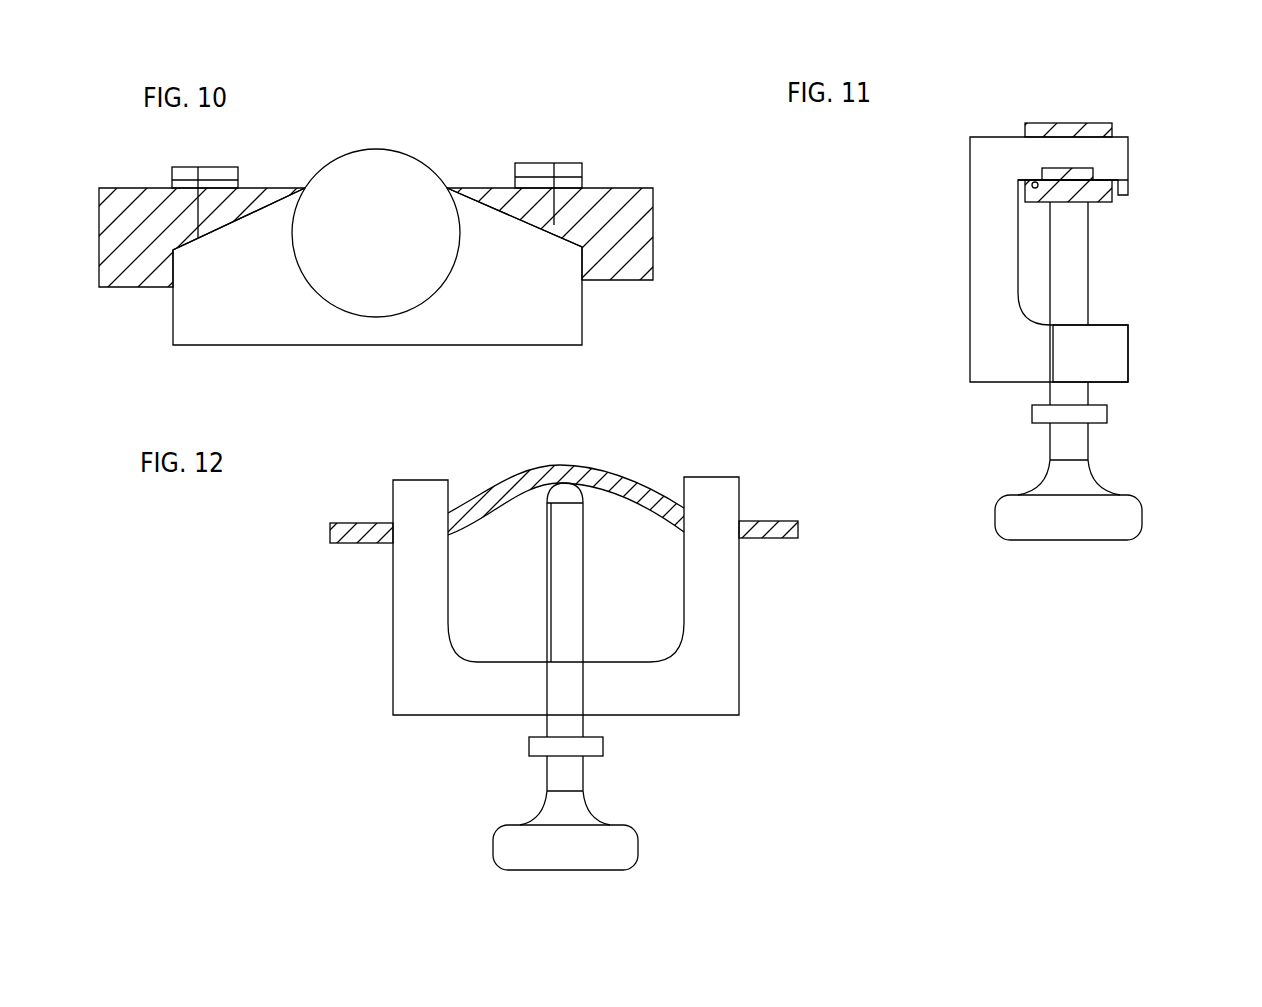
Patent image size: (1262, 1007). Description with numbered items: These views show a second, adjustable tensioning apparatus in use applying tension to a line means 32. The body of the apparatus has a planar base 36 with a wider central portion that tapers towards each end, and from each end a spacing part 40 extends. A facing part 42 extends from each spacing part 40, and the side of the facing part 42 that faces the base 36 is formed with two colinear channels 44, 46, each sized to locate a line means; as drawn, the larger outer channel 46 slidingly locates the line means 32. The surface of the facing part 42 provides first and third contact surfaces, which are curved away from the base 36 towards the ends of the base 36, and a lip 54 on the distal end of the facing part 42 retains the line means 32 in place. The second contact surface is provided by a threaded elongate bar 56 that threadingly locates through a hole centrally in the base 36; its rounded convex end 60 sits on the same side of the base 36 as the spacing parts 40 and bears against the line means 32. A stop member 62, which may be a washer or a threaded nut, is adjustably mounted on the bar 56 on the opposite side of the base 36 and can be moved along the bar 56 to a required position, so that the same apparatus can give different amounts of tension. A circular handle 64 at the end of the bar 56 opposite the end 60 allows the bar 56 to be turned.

In FIG. 10, the line means 32 is at (613, 213).
In FIG. 11, the line means 32 is at (1043, 128).
In FIG. 12, the line means 32 is at (479, 502).
In FIG. 10, the base 36 is at (545, 317).
In FIG. 11, the base 36 is at (1108, 343).
In FIG. 11, the spacing parts 40 is at (993, 253).
In FIG. 12, the spacing parts 40 is at (710, 583).
In FIG. 11, the facing parts 42 is at (1113, 157).
In FIG. 11, the channel 44 is at (1080, 172).
In FIG. 11, the outer channel 46 is at (1035, 185).
In FIG. 10, the lip 54 is at (568, 167).
In FIG. 11, the lip 54 is at (1123, 195).
In FIG. 11, the threaded elongate bar 56 is at (1073, 265).
In FIG. 12, the threaded elongate bar 56 is at (568, 598).
In FIG. 12, the rounded convex end 60 is at (562, 493).
In FIG. 11, the stop member 62 is at (1102, 408).
In FIG. 12, the stop member 62 is at (590, 746).
In FIG. 10, the circular handle 64 is at (373, 193).
In FIG. 11, the circular handle 64 is at (1065, 522).
In FIG. 12, the circular handle 64 is at (608, 847).